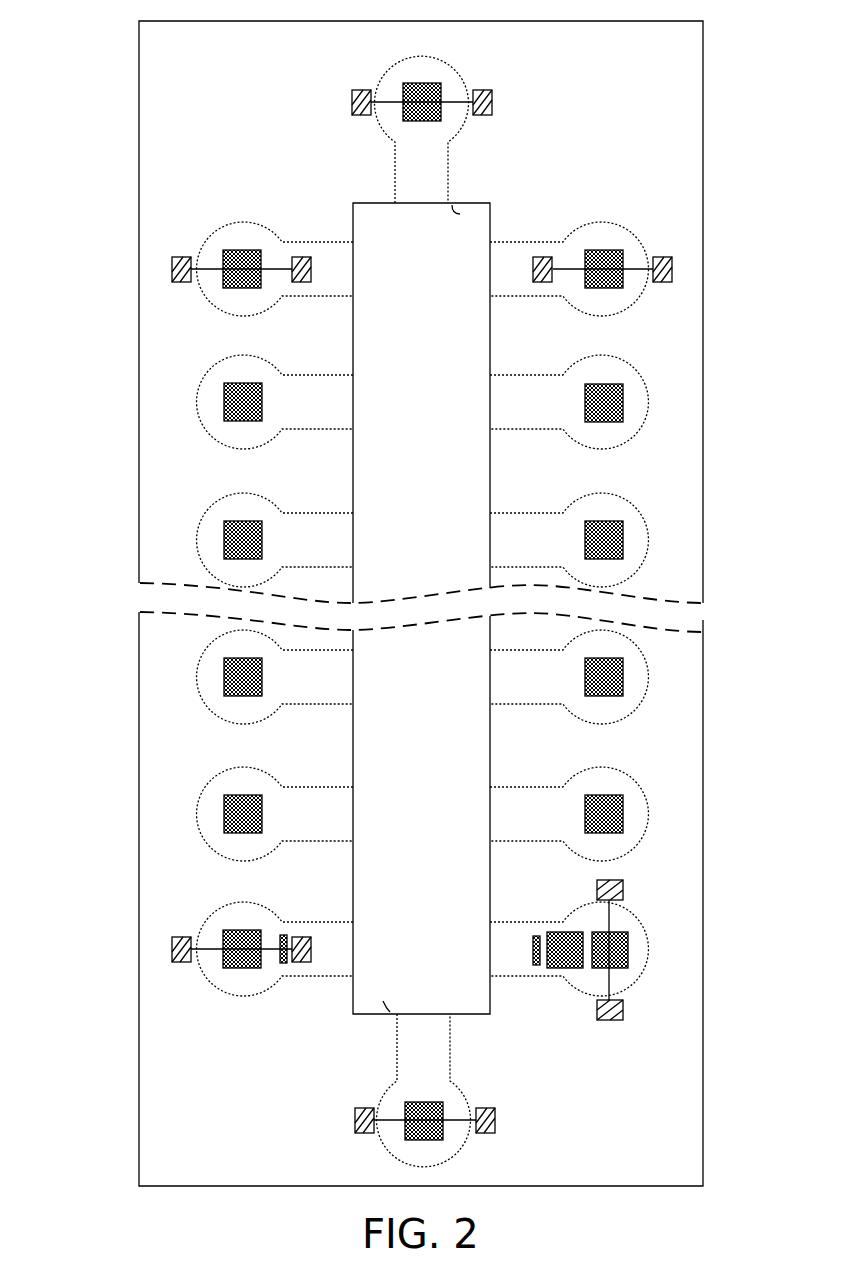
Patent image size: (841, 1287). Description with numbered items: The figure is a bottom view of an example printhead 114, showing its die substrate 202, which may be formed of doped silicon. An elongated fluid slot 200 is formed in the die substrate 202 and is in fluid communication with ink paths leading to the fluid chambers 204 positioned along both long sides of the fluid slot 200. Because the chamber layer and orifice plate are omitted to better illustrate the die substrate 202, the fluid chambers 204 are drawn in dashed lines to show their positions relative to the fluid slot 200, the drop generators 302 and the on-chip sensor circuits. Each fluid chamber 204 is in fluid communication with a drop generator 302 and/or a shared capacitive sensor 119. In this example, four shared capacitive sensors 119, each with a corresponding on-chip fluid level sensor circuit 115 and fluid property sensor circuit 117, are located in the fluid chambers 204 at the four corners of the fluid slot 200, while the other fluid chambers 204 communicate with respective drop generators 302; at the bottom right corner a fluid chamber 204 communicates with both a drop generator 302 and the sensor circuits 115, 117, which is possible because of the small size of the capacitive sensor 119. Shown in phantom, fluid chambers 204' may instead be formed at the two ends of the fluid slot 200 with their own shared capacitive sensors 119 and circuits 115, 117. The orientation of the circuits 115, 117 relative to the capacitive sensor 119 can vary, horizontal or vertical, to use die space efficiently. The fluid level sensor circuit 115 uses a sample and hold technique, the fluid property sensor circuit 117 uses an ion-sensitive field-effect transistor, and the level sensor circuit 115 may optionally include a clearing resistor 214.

The printhead 114 is at (110, 33).
The die substrate 202 is at (139, 1072).
The fluid slot 200 is at (490, 213).
The fluid chamber 204 is at (420, 615).
The fluid chamber 204' is at (413, 611).
The on-chip fluid level sensor circuit 115 is at (352, 100).
The on-chip fluid property sensor circuit 117 is at (492, 102).
The shared capacitive sensor 119 is at (440, 122).
The drop generator 302 is at (228, 400).
The clearing resistor 214 is at (285, 963).